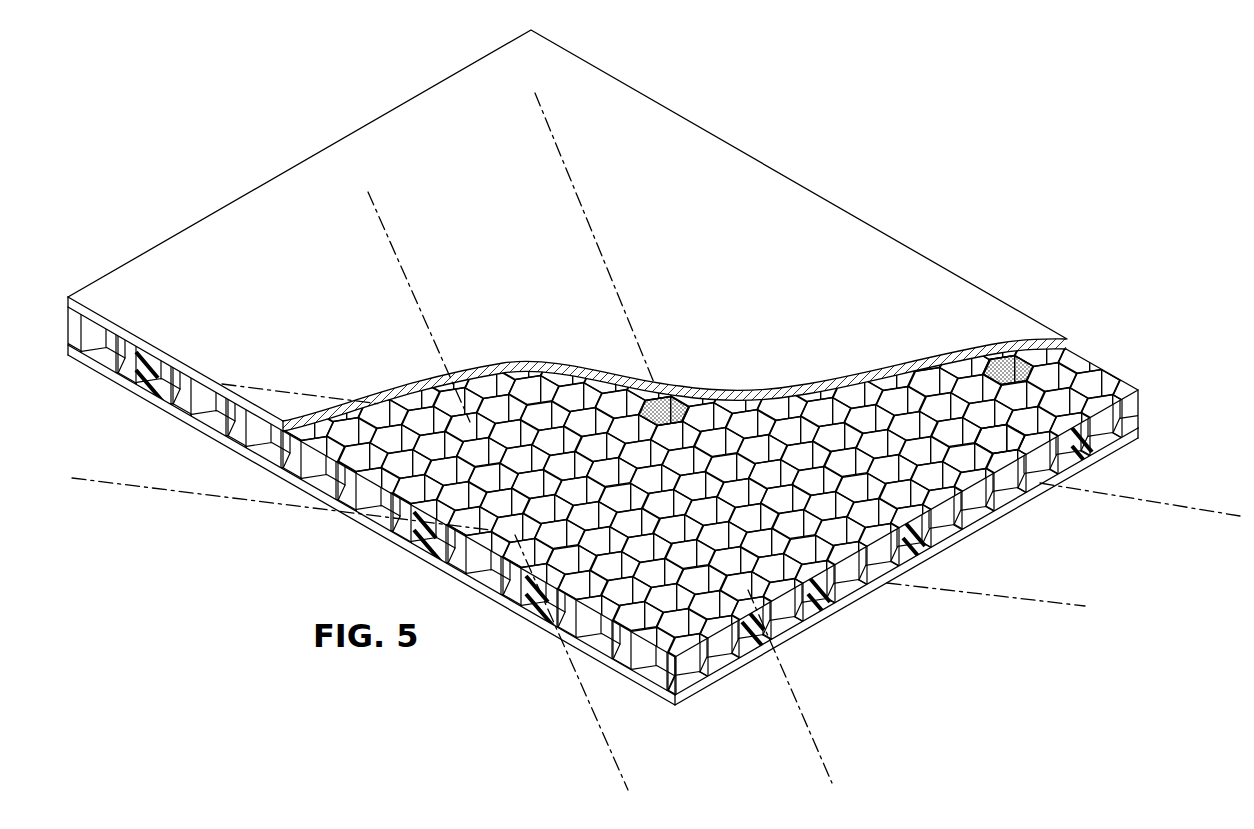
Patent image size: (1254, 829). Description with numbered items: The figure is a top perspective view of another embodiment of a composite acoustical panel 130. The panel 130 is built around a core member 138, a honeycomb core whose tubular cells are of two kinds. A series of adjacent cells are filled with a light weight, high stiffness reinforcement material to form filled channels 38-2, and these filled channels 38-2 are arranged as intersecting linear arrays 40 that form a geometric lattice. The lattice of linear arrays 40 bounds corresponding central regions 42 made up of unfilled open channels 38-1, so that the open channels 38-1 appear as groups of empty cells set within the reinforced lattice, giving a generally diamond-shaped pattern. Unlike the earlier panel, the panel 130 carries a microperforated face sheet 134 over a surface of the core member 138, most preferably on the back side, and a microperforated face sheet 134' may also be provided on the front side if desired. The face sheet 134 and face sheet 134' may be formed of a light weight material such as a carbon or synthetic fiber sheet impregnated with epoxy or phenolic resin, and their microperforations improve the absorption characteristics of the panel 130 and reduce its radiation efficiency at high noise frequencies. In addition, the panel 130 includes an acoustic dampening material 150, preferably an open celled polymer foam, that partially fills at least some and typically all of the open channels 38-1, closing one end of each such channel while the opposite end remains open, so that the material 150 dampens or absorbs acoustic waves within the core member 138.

The composite acoustical panel 130 is at (942, 166).
The microperforated face sheet 134 is at (567, 230).
The microperforated face sheet 134' is at (603, 525).
The core member 138 is at (1122, 391).
The open channels 38-1 is at (432, 449).
The filled channels 38-2 is at (690, 438).
The linear arrays 40 is at (574, 210).
The central regions 42 is at (1013, 419).
The acoustic dampening material 150 is at (92, 355).